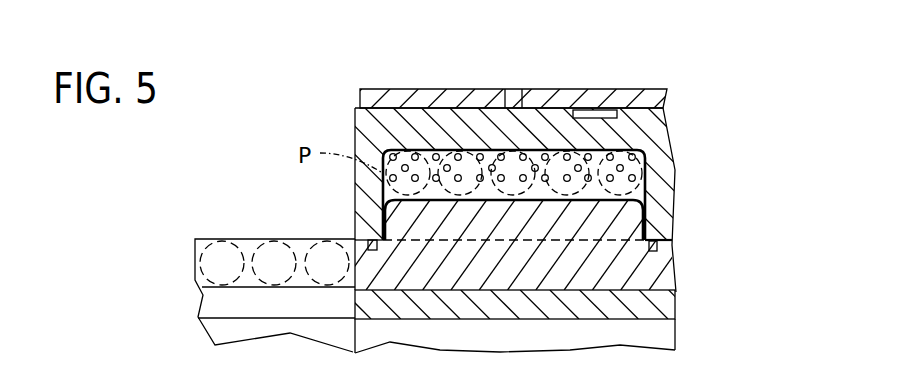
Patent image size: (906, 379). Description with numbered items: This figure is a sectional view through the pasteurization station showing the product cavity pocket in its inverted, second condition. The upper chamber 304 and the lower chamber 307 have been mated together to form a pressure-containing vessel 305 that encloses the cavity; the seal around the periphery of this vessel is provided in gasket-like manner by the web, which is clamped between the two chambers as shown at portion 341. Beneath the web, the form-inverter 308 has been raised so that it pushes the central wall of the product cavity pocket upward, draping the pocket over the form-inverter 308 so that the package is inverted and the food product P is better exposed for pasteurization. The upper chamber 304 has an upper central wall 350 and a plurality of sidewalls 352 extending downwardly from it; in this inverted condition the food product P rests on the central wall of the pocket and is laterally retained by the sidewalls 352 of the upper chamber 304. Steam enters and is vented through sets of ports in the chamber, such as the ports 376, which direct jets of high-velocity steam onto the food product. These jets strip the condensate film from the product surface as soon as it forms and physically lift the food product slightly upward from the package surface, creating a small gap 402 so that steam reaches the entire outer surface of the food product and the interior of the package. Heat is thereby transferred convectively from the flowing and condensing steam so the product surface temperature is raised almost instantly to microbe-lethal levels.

The upper chamber 304 is at (652, 143).
The pressure-containing vessel 305 is at (643, 168).
The sidewalls 352 is at (640, 188).
The ports 376 is at (447, 160).
The upper central wall 350 is at (531, 157).
The gap 402 is at (626, 217).
The form-inverter 308 is at (668, 224).
The lower chamber 307 is at (660, 268).
The portion 341 is at (355, 238).